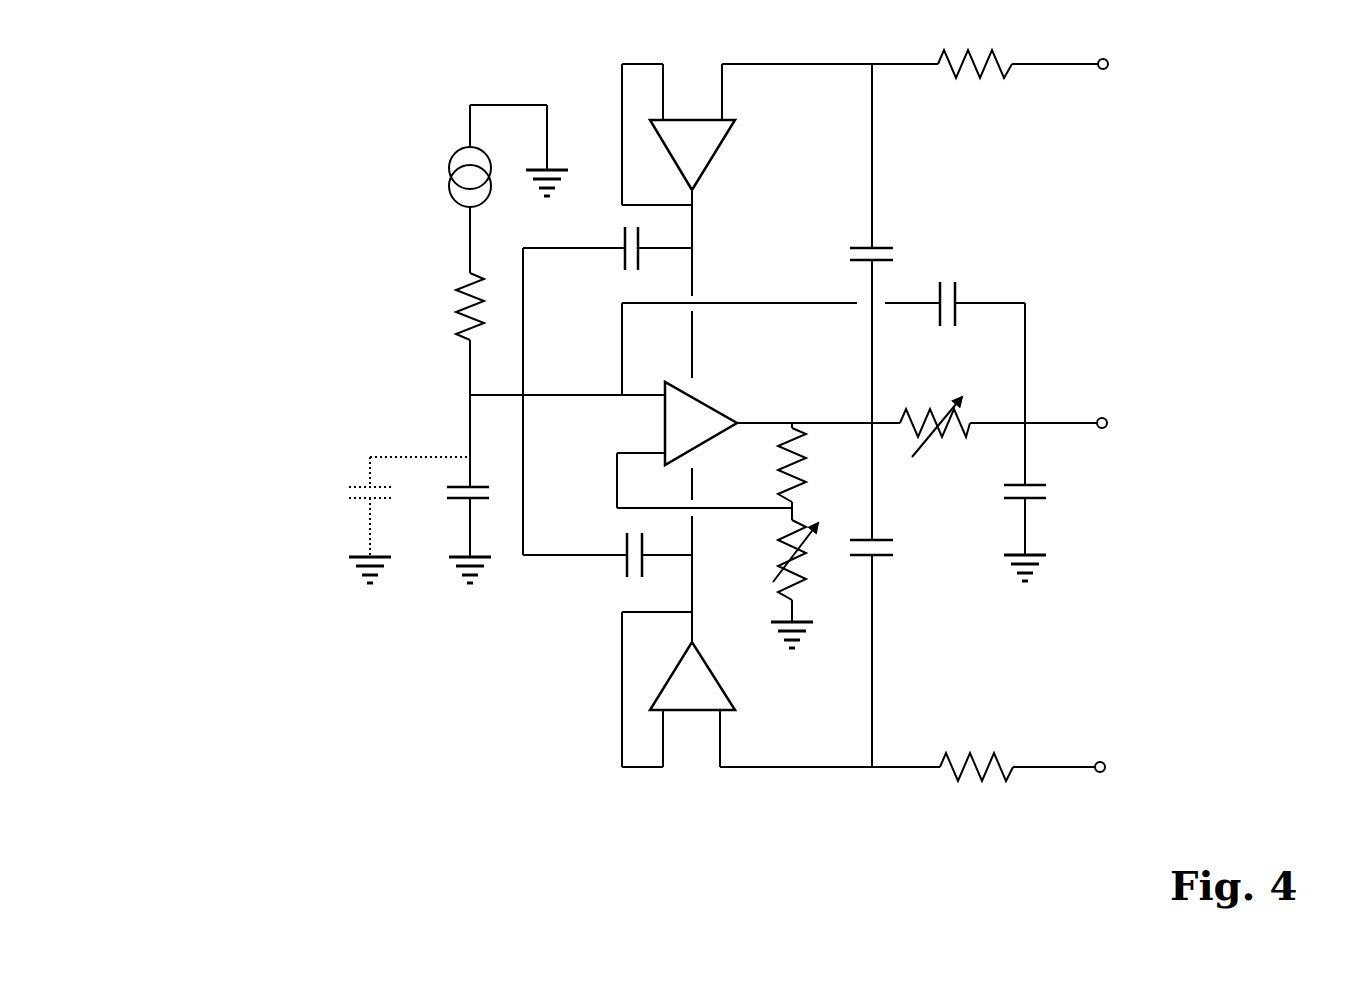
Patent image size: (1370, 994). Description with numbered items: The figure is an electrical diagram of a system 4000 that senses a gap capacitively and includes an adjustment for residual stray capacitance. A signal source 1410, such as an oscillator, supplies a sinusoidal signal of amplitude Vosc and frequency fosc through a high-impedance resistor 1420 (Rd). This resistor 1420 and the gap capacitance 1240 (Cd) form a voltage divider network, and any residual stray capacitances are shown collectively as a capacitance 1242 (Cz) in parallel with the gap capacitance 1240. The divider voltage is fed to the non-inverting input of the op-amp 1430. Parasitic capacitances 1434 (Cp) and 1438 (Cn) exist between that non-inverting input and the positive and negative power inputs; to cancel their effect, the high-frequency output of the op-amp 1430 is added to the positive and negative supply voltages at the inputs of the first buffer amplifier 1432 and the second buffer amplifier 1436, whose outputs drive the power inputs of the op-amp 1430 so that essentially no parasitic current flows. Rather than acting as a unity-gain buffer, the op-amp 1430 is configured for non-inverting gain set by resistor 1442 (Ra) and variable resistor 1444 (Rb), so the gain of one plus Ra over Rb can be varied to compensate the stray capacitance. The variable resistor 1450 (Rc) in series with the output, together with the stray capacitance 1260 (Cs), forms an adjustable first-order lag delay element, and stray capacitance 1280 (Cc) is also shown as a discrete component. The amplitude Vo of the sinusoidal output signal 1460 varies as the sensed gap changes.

The system 4000 is at (258, 120).
The signal source 1410 is at (348, 189).
The resistor 1420 is at (404, 306).
The gap capacitance 1240 is at (434, 530).
The residual stray capacitances 1242 is at (349, 520).
The op-amp 1430 is at (704, 437).
The buffer amplifier 1432 is at (708, 156).
The parasitic capacitance 1434 is at (607, 270).
The buffer amplifier 1436 is at (678, 718).
The parasitic capacitance 1438 is at (607, 575).
The resistor 1442 is at (810, 465).
The variable resistor 1444 is at (805, 578).
The variable resistor 1450 is at (956, 411).
The stray capacitance 1260 is at (973, 282).
The stray capacitance 1280 is at (1051, 528).
The sinusoidal output signal 1460 is at (1233, 403).